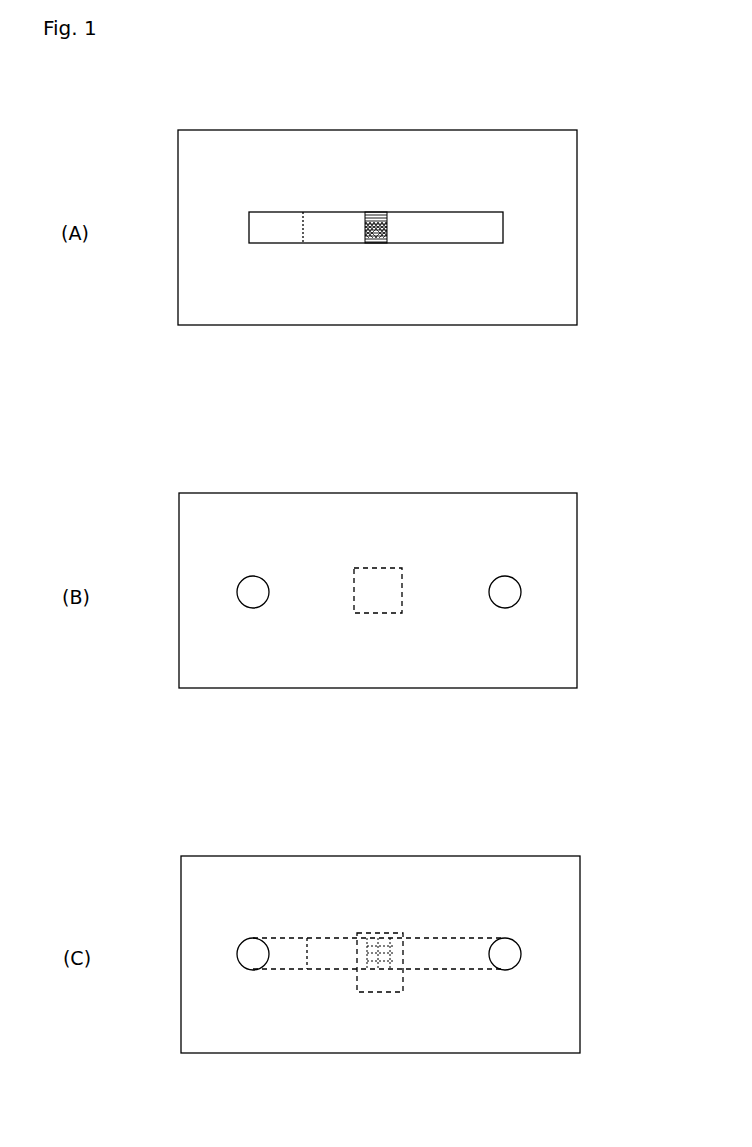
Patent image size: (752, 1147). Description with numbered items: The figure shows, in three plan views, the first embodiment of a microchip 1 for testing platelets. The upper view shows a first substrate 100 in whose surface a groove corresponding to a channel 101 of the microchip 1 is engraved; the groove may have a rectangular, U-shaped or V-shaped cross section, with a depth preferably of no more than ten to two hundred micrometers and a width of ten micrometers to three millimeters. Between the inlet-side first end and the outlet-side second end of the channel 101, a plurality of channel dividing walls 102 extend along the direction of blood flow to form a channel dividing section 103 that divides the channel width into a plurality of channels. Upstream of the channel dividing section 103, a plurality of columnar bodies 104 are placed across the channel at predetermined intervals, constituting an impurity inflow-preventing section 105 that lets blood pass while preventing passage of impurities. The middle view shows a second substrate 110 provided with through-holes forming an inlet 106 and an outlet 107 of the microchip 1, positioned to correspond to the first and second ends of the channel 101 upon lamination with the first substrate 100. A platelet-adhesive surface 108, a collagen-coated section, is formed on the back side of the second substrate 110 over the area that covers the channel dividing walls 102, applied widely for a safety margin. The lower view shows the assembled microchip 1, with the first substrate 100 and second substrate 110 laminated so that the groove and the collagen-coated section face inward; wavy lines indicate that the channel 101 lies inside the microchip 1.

The microchip 1 is at (600, 950).
The first substrate 100 is at (598, 212).
The channel 101 is at (267, 212).
The channel dividing walls 102 is at (375, 212).
The channel dividing section 103 is at (378, 992).
The columnar bodies 104 is at (307, 212).
The impurity inflow-preventing section 105 is at (307, 975).
The inlet 106 is at (254, 576).
The outlet 107 is at (505, 576).
The platelet-adhesive surface 108 is at (378, 568).
The second substrate 110 is at (598, 589).